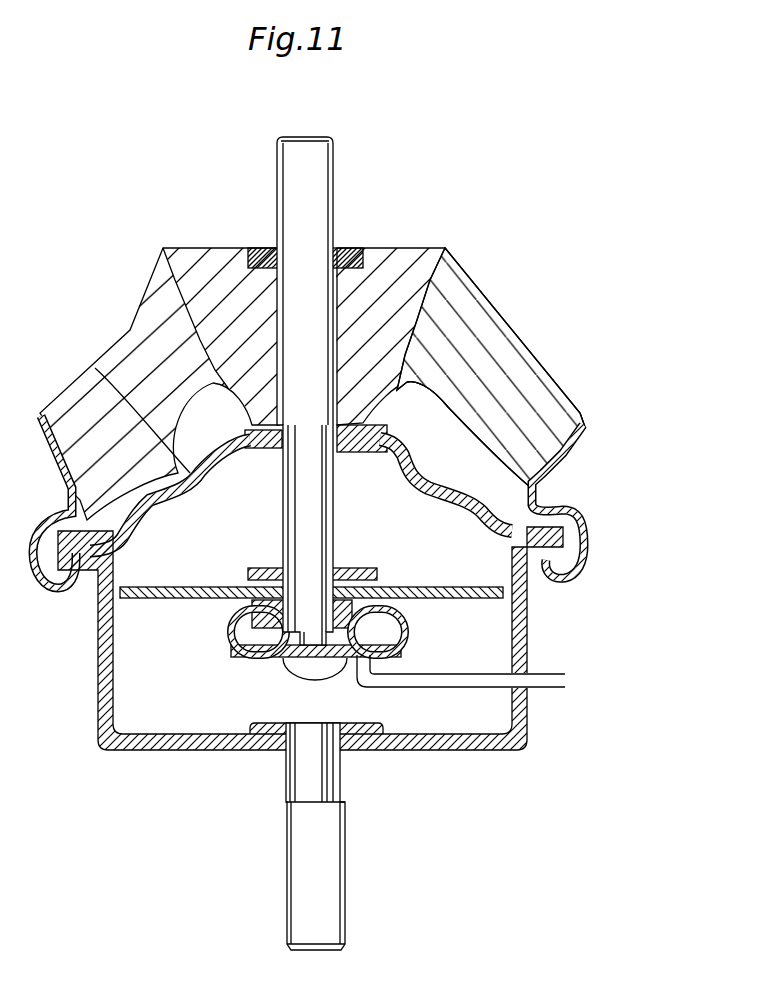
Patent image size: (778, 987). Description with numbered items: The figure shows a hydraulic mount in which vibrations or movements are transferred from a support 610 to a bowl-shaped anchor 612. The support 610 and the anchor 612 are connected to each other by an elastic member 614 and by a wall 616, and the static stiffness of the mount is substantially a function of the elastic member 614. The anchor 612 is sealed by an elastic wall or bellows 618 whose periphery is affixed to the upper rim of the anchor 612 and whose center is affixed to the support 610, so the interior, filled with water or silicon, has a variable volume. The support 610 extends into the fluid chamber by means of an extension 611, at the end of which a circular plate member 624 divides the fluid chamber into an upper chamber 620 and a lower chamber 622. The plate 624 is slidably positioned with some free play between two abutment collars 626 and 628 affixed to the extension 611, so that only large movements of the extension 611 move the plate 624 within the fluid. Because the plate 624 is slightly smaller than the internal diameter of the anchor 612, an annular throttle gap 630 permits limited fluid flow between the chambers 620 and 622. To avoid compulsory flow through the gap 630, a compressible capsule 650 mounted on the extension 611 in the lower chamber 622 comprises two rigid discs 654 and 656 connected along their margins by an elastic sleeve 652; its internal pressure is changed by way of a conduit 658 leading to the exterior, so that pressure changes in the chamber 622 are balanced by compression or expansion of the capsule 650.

The support 610 is at (403, 260).
The extension 611 is at (328, 493).
The anchor 612 is at (345, 743).
The elastic member 614 is at (478, 360).
The wall 616 is at (563, 505).
The elastic wall or bellows 618 is at (95, 368).
The upper chamber 620 is at (272, 529).
The lower chamber 622 is at (213, 717).
The plate member 624 is at (433, 590).
The abutment collar 626 is at (263, 566).
The abutment collar 628 is at (257, 598).
The annular throttle gap 630 is at (507, 592).
The compressible capsule 650 is at (267, 642).
The elastic sleeve 652 is at (225, 628).
The rigid disc 654 is at (265, 658).
The rigid disc 656 is at (402, 624).
The conduit 658 is at (483, 680).